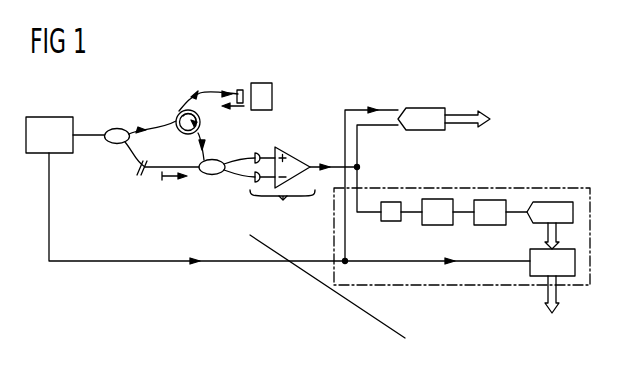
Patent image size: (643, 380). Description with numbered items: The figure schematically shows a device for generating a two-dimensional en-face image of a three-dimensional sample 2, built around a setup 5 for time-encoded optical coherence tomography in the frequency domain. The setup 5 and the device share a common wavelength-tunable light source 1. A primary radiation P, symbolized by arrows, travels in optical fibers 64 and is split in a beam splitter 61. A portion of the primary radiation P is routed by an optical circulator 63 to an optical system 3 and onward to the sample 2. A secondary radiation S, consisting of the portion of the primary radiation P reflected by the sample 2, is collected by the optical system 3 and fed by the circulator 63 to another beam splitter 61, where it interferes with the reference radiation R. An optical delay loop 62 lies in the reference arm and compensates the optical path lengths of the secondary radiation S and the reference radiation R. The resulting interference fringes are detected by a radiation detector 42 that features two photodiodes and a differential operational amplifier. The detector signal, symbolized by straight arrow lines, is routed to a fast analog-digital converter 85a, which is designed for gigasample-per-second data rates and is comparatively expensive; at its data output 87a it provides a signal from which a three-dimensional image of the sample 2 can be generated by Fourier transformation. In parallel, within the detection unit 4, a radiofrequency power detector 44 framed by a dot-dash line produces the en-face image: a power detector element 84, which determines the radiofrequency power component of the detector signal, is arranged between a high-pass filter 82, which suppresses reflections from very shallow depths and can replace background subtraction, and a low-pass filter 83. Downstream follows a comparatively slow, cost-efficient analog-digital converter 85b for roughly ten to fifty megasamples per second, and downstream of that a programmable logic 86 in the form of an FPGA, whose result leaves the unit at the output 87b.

The wavelength-tunable light source 1 is at (50, 117).
The optical fibers 64 is at (88, 133).
The beam splitter 61 is at (114, 144).
The primary radiation P is at (130, 128).
The optical circulator 63 is at (178, 130).
The optical system 3 is at (243, 90).
The sample 2 is at (272, 99).
The secondary radiation S is at (242, 112).
The optical delay loop 62 is at (140, 178).
The reference radiation R is at (170, 181).
The radiation detector 42 is at (290, 186).
The fast analog-digital converter 85a is at (424, 107).
The data output 87a is at (469, 113).
The radiofrequency power detector 44 is at (410, 287).
The high-pass filter 82 is at (392, 202).
The power detector element 84 is at (440, 199).
The low-pass filter 83 is at (491, 200).
The slow analog-digital converter 85b is at (550, 202).
The programmable logic 86 is at (540, 277).
The output 87b is at (563, 300).
The detection unit 4 is at (336, 291).
The setup for optical coherence tomography 5 is at (575, 51).